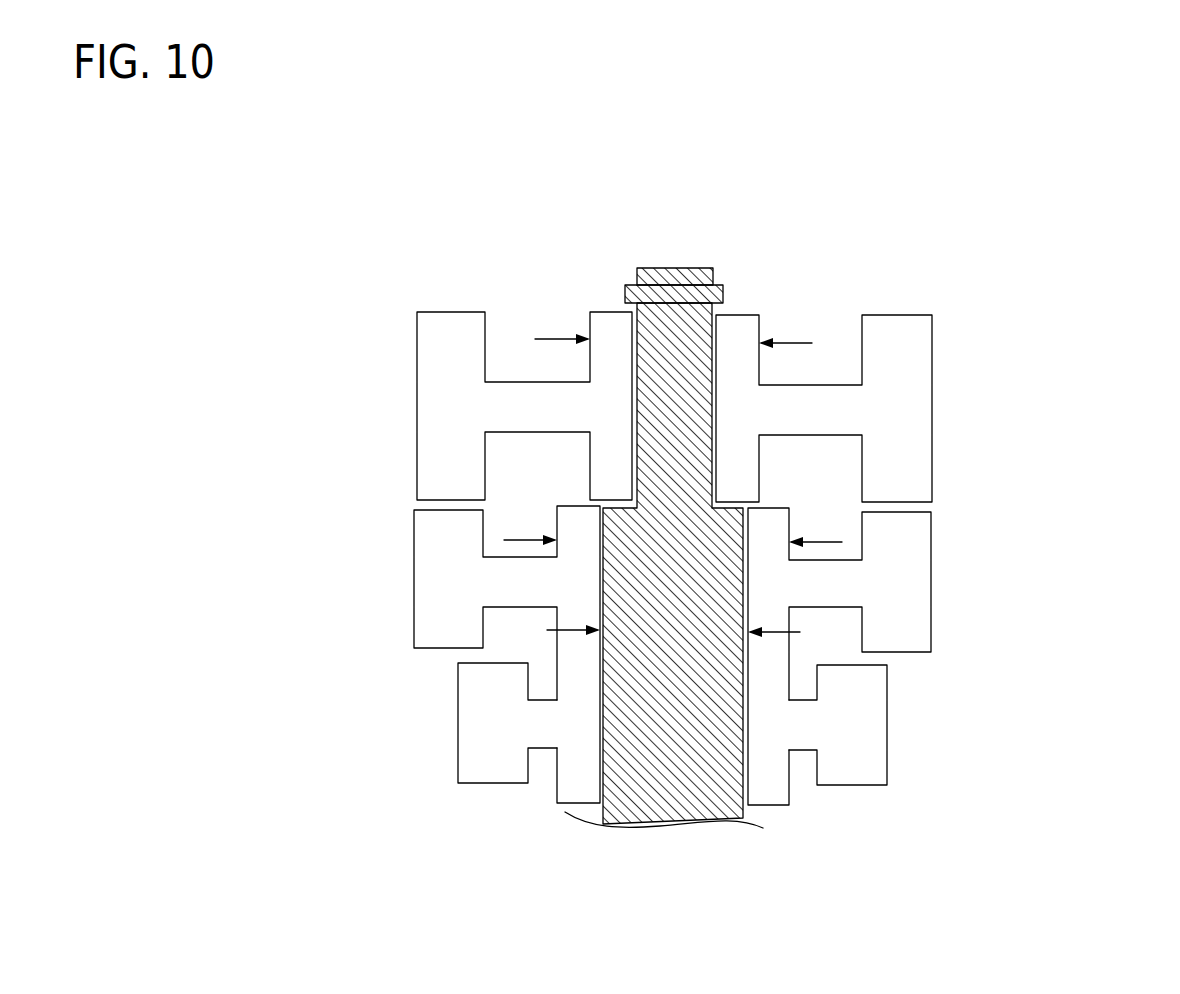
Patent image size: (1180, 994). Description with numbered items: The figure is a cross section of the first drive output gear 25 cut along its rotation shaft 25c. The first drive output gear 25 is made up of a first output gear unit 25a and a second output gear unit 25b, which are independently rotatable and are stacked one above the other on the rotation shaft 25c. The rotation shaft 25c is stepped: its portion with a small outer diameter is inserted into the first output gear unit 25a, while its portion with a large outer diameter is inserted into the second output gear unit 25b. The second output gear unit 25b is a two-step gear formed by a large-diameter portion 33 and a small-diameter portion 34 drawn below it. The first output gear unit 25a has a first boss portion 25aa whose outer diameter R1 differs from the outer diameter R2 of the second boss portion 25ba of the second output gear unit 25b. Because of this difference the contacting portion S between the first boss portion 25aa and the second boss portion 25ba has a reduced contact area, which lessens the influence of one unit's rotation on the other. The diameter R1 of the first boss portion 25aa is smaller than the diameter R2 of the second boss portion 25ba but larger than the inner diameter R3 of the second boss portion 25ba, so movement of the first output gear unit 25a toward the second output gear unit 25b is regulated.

The first drive output gear 25 is at (358, 272).
The rotation shaft 25c is at (680, 268).
The first output gear unit 25a is at (935, 380).
The first boss portion 25aa is at (590, 455).
The contacting portion S is at (760, 502).
The diameter of the first boss portion R1 is at (677, 322).
The diameter of the second boss portion R2 is at (675, 519).
The inner diameter of the second boss portion R3 is at (700, 630).
The second output gear unit 25b is at (1090, 603).
The large-diameter portion 33 is at (937, 580).
The small-diameter portion 34 is at (895, 730).
The second boss portion 25ba is at (552, 660).